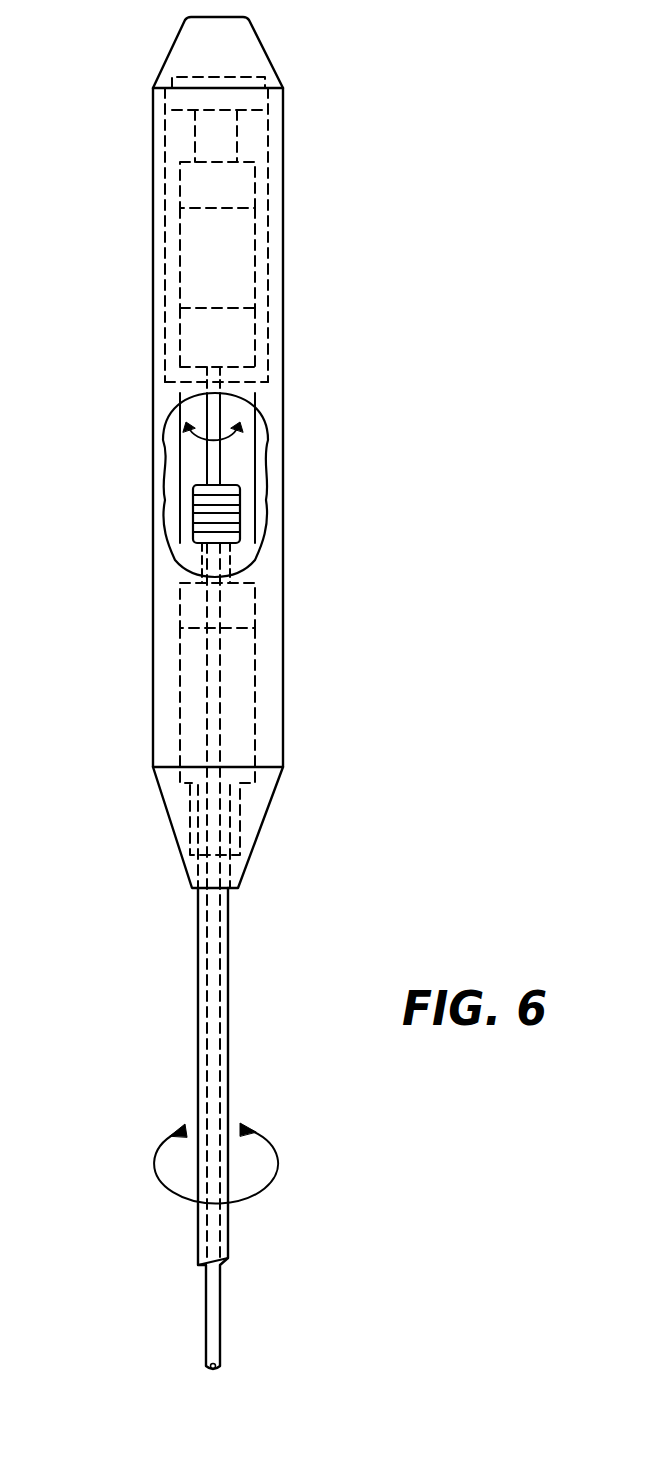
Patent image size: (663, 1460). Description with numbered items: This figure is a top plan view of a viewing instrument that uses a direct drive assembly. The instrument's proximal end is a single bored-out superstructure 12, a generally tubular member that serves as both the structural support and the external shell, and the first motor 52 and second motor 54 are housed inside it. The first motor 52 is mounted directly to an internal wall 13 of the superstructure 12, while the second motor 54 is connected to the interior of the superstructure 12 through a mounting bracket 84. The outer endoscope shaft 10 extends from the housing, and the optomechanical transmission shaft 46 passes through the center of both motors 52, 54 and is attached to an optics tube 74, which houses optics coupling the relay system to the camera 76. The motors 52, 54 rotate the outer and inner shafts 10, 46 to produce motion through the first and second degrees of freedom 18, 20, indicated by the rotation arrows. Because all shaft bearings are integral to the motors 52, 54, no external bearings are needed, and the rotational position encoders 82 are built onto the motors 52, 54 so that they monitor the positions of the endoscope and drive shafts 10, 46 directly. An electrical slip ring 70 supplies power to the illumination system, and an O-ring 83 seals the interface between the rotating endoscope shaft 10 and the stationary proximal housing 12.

The outer endoscope shaft 10 is at (230, 1060).
The proximal end superstructure 12 is at (270, 665).
The internal wall 13 is at (157, 177).
The first degree of freedom 18 is at (152, 1148).
The second degree of freedom 20 is at (175, 443).
The inner drive shaft 46 is at (227, 462).
The first motor 52 is at (177, 695).
The second motor 54 is at (190, 267).
The electrical slip ring 70 is at (195, 522).
The proximal optics tube 74 is at (237, 137).
The electronic image sensor 76 is at (174, 77).
The encoders 82 is at (268, 193).
The O-ring 83 is at (245, 872).
The mounting bracket 84 is at (268, 343).